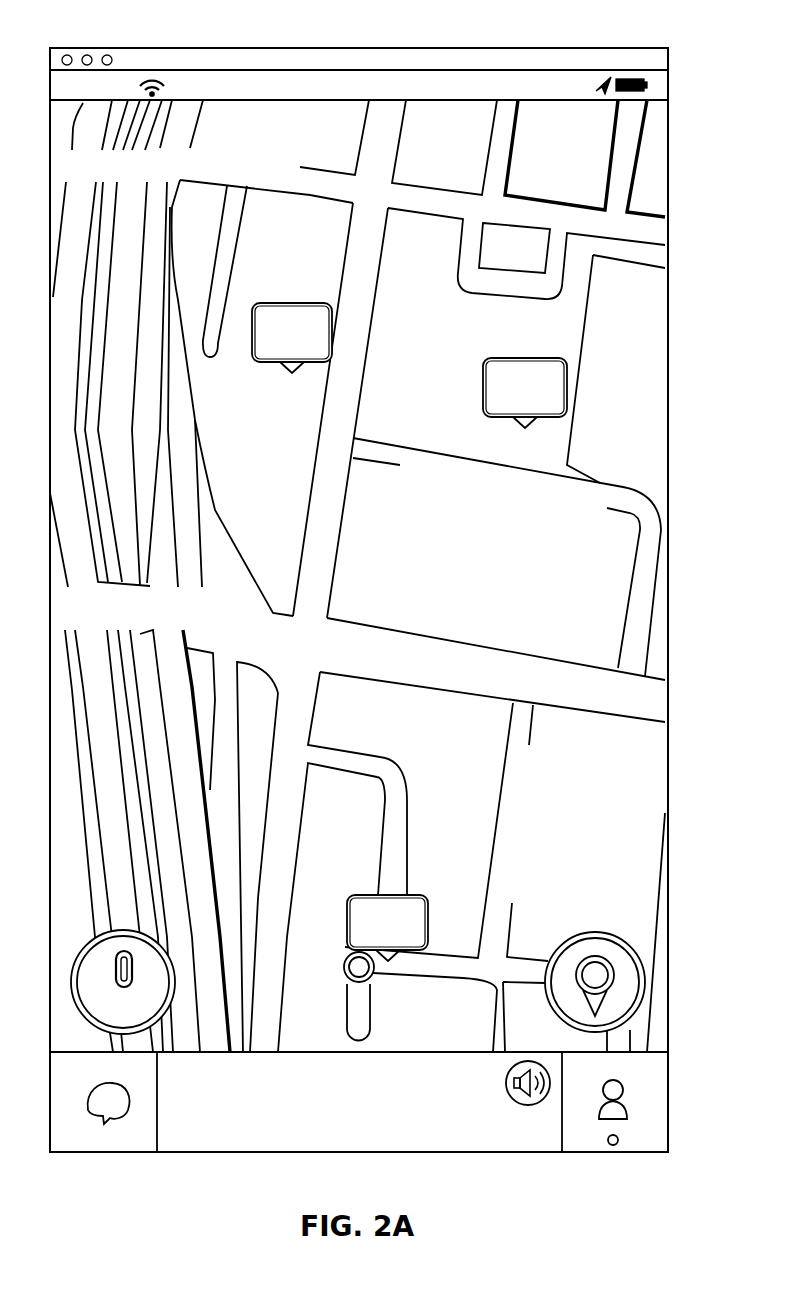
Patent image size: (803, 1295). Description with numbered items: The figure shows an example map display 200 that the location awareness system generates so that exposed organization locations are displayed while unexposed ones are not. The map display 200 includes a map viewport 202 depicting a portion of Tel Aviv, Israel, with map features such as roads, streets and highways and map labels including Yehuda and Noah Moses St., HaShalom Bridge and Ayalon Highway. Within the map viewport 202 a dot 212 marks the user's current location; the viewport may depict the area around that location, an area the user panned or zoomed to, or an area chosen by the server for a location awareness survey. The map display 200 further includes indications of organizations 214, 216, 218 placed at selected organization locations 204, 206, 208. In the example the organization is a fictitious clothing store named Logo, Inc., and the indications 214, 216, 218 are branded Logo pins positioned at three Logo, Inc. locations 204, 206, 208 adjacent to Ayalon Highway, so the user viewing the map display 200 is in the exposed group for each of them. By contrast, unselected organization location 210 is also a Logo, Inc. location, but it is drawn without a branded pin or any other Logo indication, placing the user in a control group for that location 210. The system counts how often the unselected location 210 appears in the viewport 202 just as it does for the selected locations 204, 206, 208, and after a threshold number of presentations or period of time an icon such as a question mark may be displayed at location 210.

The map display 200 is at (392, 28).
The map viewport 202 is at (668, 173).
The selected organization location 204 is at (291, 366).
The selected organization location 206 is at (526, 425).
The selected organization location 208 is at (401, 960).
The unselected organization location 210 is at (523, 618).
The dot 212 is at (376, 975).
The indication of organization 214 is at (298, 303).
The indication of organization 216 is at (528, 358).
The indication of organization 218 is at (392, 895).